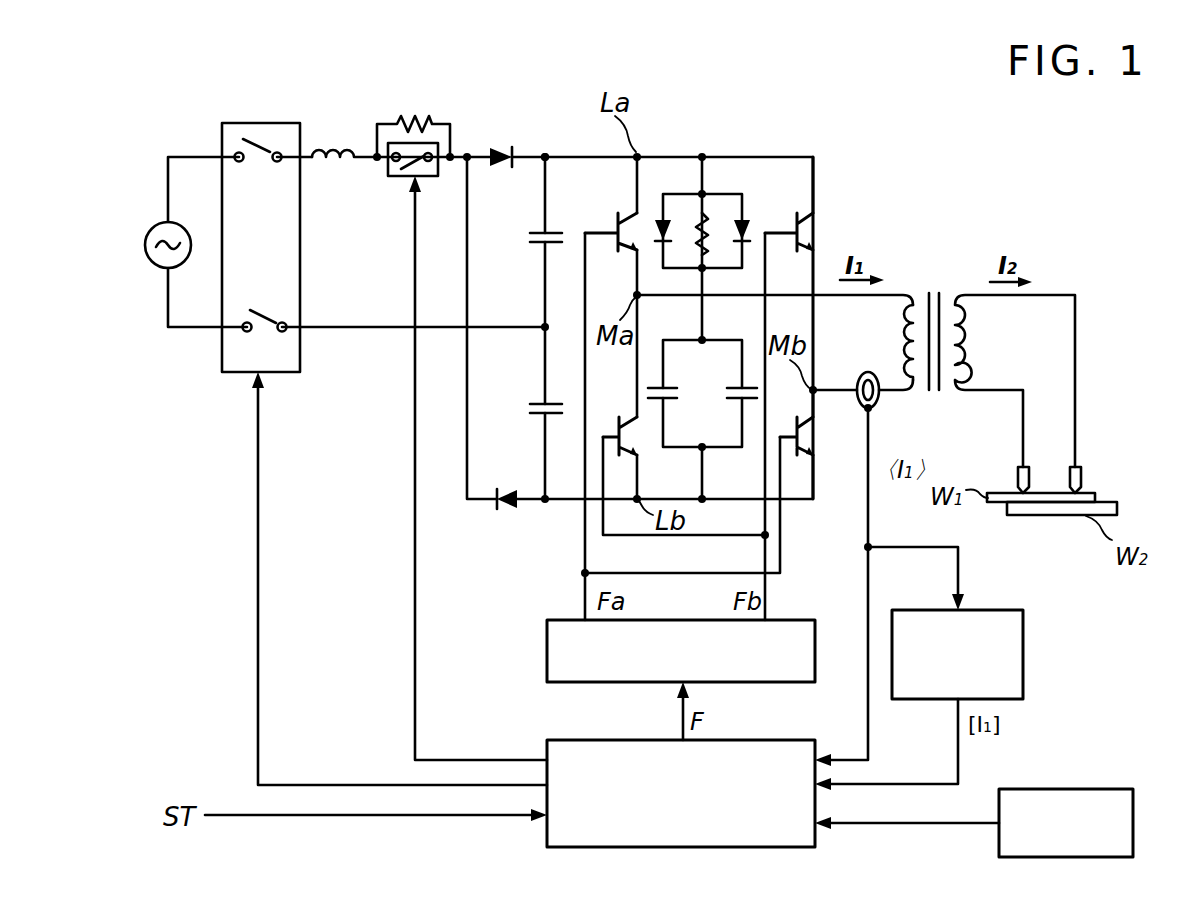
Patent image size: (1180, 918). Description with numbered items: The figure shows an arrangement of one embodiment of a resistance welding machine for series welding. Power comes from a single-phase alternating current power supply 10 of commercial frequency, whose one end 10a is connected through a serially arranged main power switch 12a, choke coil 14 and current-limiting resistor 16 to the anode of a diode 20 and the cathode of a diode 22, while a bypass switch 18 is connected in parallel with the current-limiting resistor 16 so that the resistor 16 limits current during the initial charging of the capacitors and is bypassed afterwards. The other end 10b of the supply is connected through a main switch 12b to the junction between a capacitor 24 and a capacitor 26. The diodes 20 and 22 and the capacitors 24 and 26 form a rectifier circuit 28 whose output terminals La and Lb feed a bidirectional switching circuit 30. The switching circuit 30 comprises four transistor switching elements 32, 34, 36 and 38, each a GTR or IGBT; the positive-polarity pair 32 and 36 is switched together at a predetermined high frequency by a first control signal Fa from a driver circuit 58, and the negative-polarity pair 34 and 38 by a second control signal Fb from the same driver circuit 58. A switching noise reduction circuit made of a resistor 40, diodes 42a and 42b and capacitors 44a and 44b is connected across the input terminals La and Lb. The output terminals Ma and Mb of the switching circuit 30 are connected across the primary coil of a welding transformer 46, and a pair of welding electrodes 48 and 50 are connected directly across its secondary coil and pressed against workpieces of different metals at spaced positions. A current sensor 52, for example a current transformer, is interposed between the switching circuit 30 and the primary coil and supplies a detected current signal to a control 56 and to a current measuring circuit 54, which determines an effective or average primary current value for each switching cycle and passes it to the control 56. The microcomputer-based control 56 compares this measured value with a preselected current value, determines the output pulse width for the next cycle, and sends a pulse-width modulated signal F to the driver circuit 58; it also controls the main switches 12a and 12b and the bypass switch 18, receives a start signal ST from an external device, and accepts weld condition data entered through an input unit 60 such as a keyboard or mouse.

The single-phase alternating current power supply 10 is at (147, 241).
The one end of the alternating current power supply 10a is at (168, 222).
The other end of the alternating current power supply 10b is at (166, 269).
The main power switch 12a is at (262, 141).
The main switch 12b is at (260, 332).
The choke coil 14 is at (333, 148).
The current-limiting resistor 16 is at (417, 120).
The bypass switch 18 is at (397, 180).
The diode 20 is at (500, 150).
The diode 22 is at (508, 504).
The capacitor 24 is at (530, 238).
The capacitor 26 is at (530, 406).
The rectifier circuit 28 is at (550, 140).
The bidirectional switching circuit 30 is at (826, 142).
The transistor switching element 32 is at (616, 220).
The transistor switching element 34 is at (820, 236).
The transistor switching element 36 is at (815, 440).
The transistor switching element 38 is at (617, 427).
The resistor 40 is at (712, 216).
The diode 42a is at (655, 206).
The diode 42b is at (770, 200).
The capacitor 44a is at (677, 392).
The capacitor 44b is at (748, 394).
The welding transformer 46 is at (934, 290).
The welding electrode 48 is at (1084, 476).
The welding electrode 50 is at (1018, 478).
The current sensor 52 is at (878, 402).
The current measuring circuit 54 is at (1025, 630).
The control 56 is at (557, 740).
The driver circuit 58 is at (547, 645).
The input unit 60 is at (1082, 788).